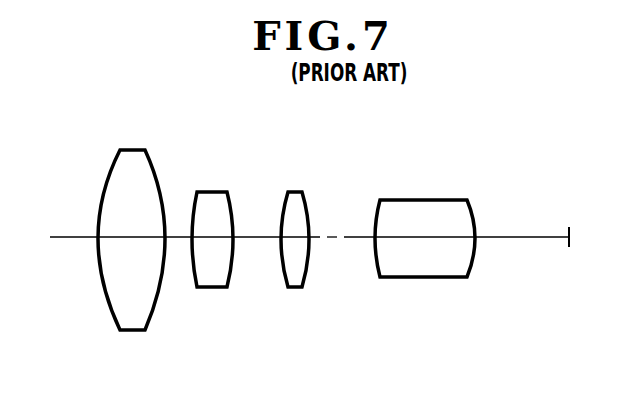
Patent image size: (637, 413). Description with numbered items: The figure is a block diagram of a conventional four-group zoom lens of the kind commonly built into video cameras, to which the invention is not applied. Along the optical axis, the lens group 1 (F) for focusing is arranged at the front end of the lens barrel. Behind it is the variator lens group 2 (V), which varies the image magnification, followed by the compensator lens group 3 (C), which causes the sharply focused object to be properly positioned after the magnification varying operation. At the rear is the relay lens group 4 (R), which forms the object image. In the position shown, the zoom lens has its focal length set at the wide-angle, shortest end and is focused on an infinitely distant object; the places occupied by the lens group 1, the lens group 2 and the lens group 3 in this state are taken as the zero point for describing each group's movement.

The lens group (F) for focusing 1 is at (120, 182).
The variator lens group (V) 2 is at (216, 203).
The compensator lens group (C) 3 is at (295, 203).
The relay lens group (R) 4 is at (421, 207).